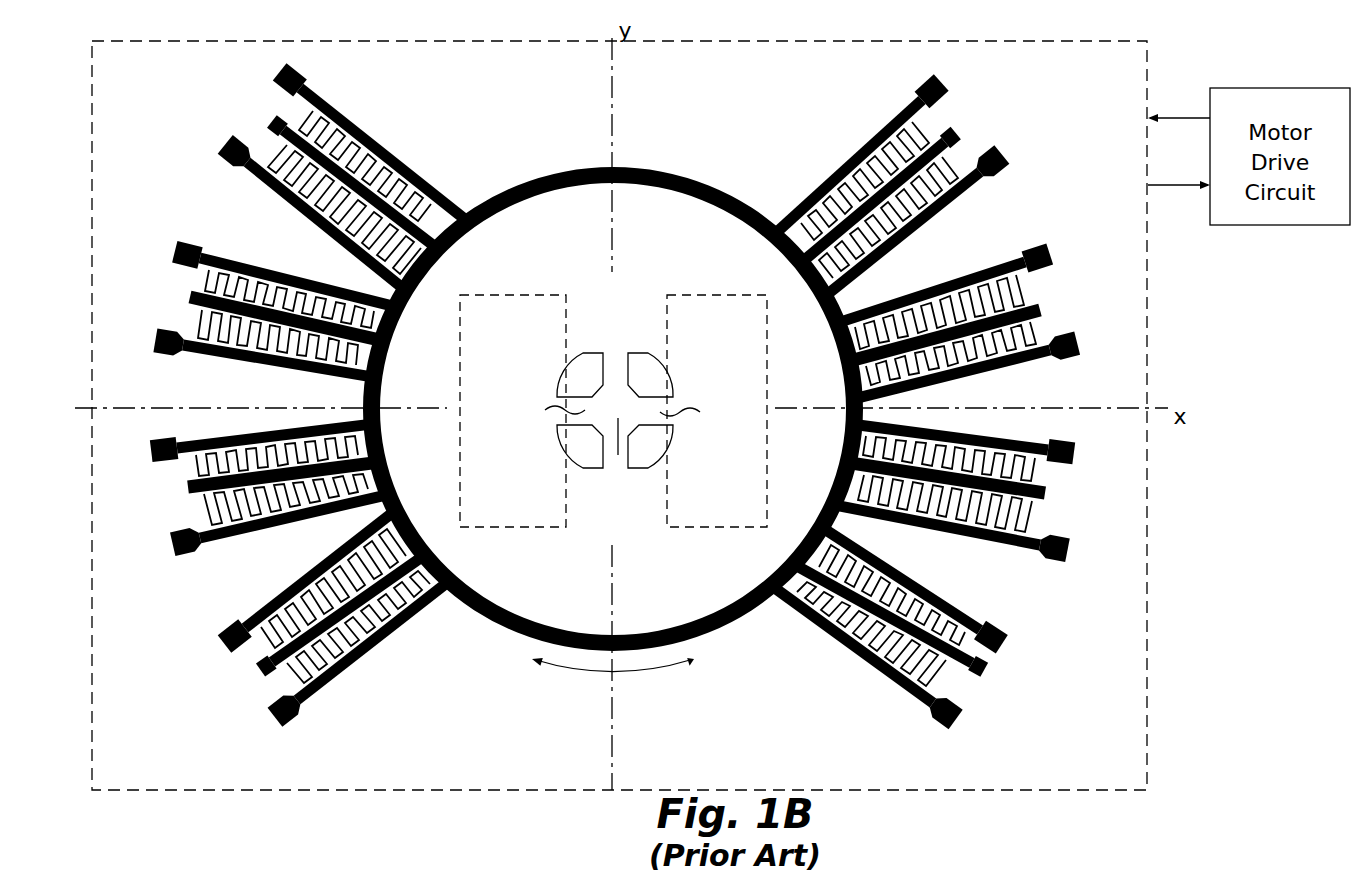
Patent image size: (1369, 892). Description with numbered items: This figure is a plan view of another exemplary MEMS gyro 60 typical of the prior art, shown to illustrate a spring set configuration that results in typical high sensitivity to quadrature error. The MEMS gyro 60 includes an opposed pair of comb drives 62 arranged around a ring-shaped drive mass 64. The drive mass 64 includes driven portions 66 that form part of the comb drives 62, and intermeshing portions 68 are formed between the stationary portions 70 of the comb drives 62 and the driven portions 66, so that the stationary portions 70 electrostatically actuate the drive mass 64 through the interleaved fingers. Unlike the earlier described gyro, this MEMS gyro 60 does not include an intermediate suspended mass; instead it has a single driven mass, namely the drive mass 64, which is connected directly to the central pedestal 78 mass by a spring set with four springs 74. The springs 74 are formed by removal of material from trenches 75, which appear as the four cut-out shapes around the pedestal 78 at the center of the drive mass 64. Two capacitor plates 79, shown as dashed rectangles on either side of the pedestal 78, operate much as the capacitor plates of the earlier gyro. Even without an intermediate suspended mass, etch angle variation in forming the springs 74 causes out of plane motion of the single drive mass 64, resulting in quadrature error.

The MEMS gyro 60 is at (737, 116).
The comb drives 62 is at (619, 391).
The drive mass 64 is at (540, 205).
The driven portions 66 is at (280, 125).
The intermeshing portions 68 is at (262, 146).
The stationary portions 70 is at (293, 82).
The springs 74 is at (622, 362).
The trenches 75 is at (595, 352).
The pedestal 78 is at (622, 455).
The capacitor plates 79 is at (522, 293).